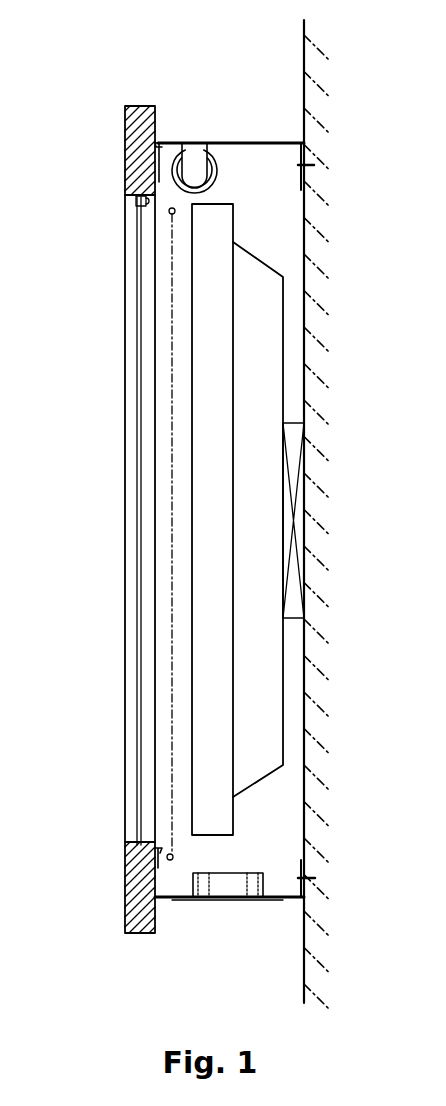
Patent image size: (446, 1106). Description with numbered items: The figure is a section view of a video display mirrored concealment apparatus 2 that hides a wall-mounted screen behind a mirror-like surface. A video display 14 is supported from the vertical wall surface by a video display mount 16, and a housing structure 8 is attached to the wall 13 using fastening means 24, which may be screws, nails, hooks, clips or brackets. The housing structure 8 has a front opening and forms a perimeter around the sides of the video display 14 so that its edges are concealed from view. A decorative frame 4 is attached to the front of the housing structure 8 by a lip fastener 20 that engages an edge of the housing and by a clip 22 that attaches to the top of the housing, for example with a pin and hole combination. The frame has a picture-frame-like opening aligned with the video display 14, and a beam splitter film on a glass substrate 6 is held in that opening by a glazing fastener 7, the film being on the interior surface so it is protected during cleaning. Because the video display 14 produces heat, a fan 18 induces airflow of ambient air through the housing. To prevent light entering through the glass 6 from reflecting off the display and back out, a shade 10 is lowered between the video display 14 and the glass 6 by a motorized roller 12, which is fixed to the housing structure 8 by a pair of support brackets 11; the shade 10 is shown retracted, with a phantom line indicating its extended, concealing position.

The video display mirrored concealment apparatus 2 is at (99, 1001).
The decorative frame 4 is at (124, 895).
The glass substrate 6 is at (137, 380).
The glazing fastener 7 is at (135, 203).
The housing structure 8 is at (252, 937).
The shade 10 is at (169, 213).
The support brackets 11 is at (226, 142).
The motorized roller 12 is at (217, 178).
The wall 13 is at (272, 991).
The video display 14 is at (283, 663).
The video display mount 16 is at (291, 616).
The fan 18 is at (223, 898).
The lip fastener 20 is at (162, 852).
The clip 22 is at (160, 140).
The fastening means 24 is at (298, 172).